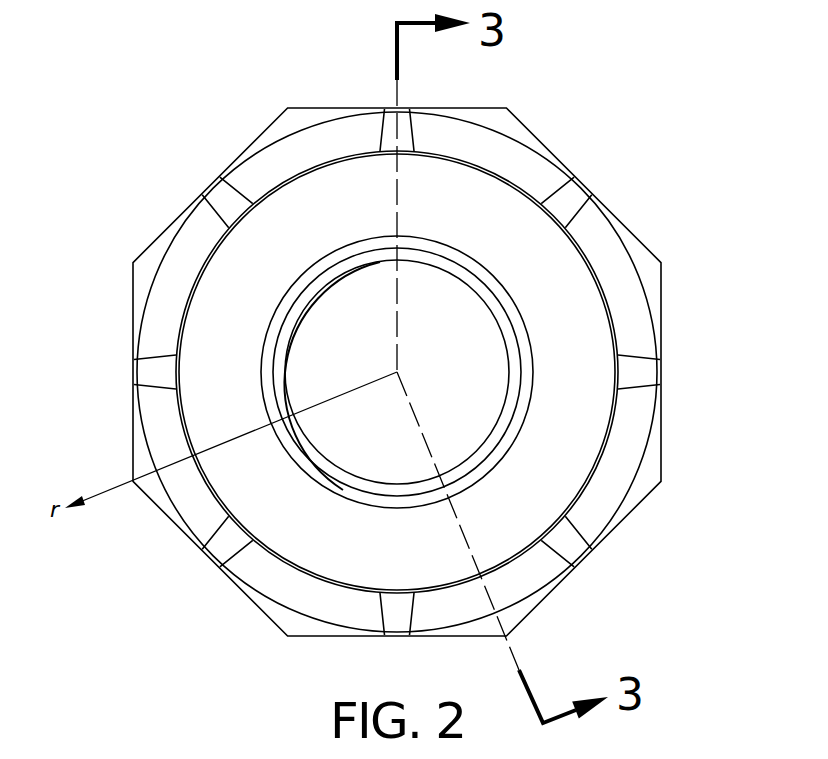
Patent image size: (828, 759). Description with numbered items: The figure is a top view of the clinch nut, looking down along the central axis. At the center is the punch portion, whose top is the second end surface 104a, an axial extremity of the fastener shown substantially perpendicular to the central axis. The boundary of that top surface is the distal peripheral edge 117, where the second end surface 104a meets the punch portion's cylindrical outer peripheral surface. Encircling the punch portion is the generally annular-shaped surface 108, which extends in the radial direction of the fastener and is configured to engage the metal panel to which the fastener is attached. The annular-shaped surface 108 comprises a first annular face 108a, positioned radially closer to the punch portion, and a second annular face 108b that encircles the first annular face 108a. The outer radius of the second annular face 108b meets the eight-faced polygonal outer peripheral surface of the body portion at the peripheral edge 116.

The second end surface 104a is at (298, 262).
The annular-shaped surface 108 is at (442, 372).
The first annular face 108a is at (637, 332).
The second annular face 108b is at (652, 273).
The peripheral edge 116 is at (660, 465).
The distal peripheral edge 117 is at (580, 497).